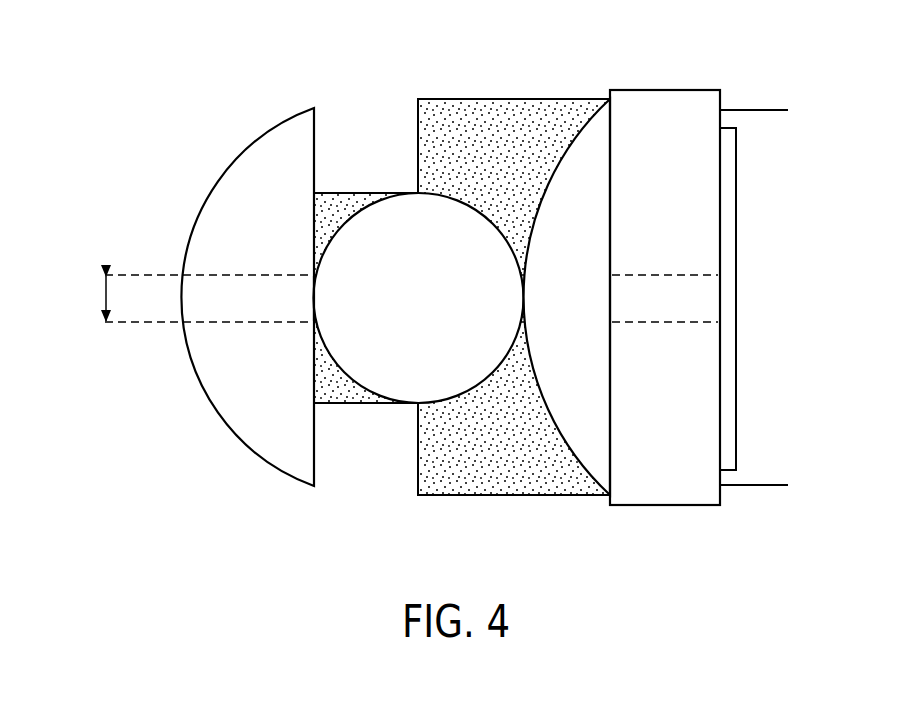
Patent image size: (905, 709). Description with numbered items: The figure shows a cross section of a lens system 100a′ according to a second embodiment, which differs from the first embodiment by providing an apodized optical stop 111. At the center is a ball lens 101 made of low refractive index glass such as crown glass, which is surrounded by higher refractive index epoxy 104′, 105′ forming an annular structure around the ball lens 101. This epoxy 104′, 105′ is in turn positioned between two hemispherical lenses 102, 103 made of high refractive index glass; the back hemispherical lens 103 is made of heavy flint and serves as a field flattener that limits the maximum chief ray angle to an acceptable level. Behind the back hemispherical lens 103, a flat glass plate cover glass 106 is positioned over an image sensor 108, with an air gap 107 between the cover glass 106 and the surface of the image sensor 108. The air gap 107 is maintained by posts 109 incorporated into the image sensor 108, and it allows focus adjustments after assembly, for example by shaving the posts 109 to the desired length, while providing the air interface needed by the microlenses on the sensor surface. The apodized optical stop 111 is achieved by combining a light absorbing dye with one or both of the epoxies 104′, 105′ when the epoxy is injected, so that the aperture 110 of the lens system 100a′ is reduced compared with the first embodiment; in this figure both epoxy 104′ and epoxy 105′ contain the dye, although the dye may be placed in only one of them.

The lens system 100a′ is at (262, 82).
The ball lens 101 is at (405, 244).
The hemispherical lens 102 is at (277, 199).
The back hemispherical lens 103 is at (563, 241).
The epoxy 104′ is at (332, 215).
The epoxy 105′ is at (487, 118).
The cover glass 106 is at (650, 241).
The air gap 107 is at (726, 200).
The image sensor 108 is at (738, 325).
The posts 109 is at (733, 103).
The aperture 110 is at (104, 297).
The apodized optical stop 111 is at (312, 298).